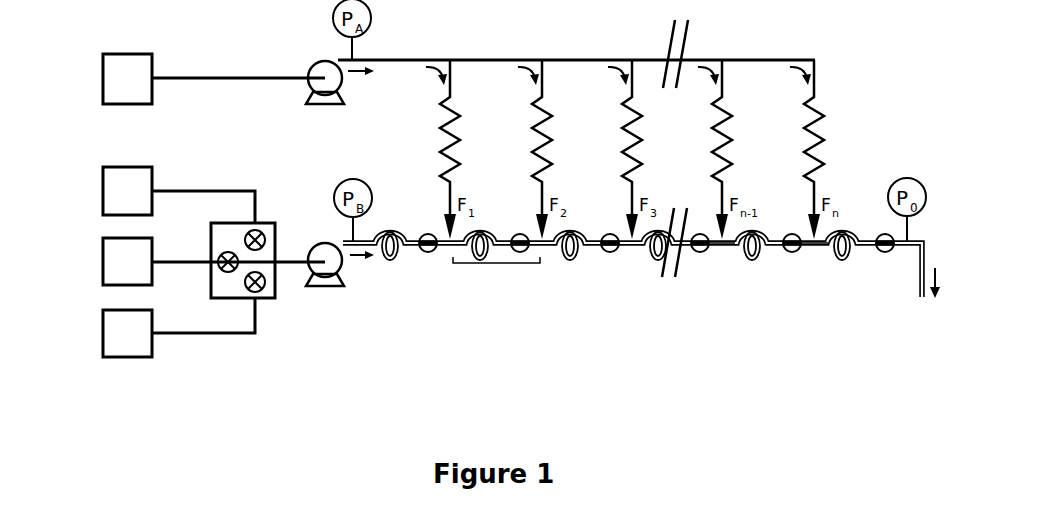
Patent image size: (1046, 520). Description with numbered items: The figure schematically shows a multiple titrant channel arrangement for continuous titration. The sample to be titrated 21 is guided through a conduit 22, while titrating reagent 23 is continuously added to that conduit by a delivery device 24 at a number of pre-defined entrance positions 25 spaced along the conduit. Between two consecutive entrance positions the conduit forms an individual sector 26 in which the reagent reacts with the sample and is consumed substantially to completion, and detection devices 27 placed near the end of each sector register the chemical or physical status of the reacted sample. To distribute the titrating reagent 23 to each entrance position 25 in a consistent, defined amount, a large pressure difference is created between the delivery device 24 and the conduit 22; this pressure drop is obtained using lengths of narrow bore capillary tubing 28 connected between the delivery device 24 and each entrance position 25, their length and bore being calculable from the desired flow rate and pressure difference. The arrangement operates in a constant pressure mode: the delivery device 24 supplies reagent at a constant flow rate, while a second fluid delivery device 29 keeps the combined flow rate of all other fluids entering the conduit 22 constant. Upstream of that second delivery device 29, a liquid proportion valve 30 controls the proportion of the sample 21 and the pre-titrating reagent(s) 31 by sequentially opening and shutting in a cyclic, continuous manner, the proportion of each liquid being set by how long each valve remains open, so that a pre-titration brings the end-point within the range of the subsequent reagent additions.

The sample to be titrated 21 is at (125, 357).
The conduit 22 is at (390, 261).
The titrating reagent 23 is at (125, 54).
The delivery device 24 is at (325, 61).
The entrance positions 25 is at (814, 250).
The individual sector 26 is at (497, 264).
The detection devices 27 is at (428, 253).
The narrow bore capillary tubing 28 is at (733, 168).
The second fluid delivery device 29 is at (331, 245).
The liquid proportion valve 30 is at (222, 236).
The pre-titrating reagent(s) 31 is at (102, 263).